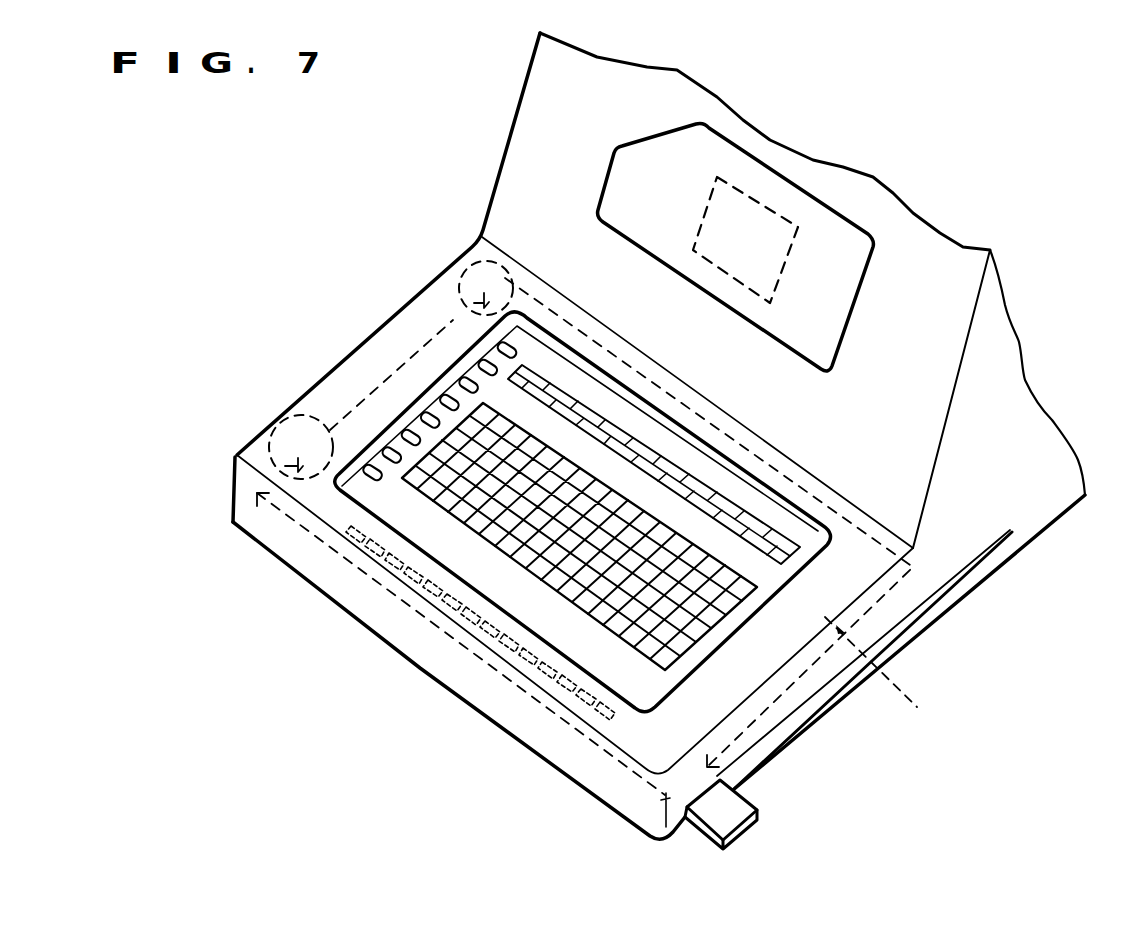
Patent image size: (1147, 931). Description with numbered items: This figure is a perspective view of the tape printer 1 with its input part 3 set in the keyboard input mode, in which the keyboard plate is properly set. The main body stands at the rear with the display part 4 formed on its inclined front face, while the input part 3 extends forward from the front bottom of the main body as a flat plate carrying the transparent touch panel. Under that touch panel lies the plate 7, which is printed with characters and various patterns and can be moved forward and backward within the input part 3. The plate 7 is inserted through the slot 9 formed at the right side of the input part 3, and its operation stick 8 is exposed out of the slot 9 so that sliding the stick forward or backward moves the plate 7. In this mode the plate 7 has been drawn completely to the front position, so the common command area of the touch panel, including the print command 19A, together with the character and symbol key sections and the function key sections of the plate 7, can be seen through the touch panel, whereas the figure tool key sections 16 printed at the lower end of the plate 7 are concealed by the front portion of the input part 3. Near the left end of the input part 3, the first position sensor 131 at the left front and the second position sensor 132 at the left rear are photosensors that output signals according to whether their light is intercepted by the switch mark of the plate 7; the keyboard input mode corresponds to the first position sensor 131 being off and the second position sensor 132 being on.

The tape printer 1 is at (1013, 397).
The input part 3 is at (460, 620).
The display part 4 is at (820, 237).
The plate 7 is at (884, 679).
The operation stick 8 is at (743, 803).
The slot 9 is at (817, 700).
The figure tool key sections 16 is at (338, 547).
The print command 19A is at (427, 410).
The first position sensor 131 is at (297, 428).
The second position sensor 132 is at (410, 280).